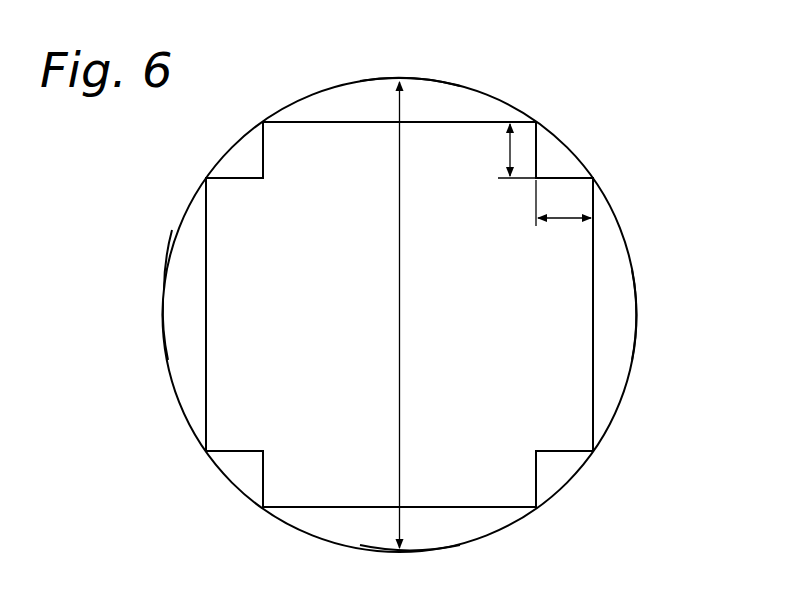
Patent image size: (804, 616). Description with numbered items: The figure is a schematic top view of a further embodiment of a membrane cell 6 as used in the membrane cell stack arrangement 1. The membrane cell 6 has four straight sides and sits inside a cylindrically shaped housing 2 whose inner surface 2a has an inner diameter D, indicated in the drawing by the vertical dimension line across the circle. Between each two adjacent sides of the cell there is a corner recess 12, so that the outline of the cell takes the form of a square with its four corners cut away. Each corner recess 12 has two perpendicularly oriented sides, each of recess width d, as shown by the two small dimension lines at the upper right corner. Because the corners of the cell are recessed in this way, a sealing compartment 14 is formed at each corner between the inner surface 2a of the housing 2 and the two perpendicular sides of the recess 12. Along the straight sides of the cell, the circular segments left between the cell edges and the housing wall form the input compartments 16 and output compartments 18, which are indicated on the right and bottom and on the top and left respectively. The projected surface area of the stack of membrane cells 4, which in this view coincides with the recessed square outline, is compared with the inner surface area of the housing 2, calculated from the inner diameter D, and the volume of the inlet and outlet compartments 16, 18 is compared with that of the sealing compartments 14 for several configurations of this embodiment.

The membrane cell stack arrangement 1 is at (286, 88).
The housing 2 is at (352, 82).
The inner surface of the housing 2a is at (163, 330).
The stack of membrane cells 4 is at (322, 508).
The membrane cell 6 is at (467, 457).
The corner recess 12 is at (565, 178).
The sealing compartment 14 is at (555, 158).
The input compartment 16 is at (615, 320).
The output compartment 18 is at (417, 95).